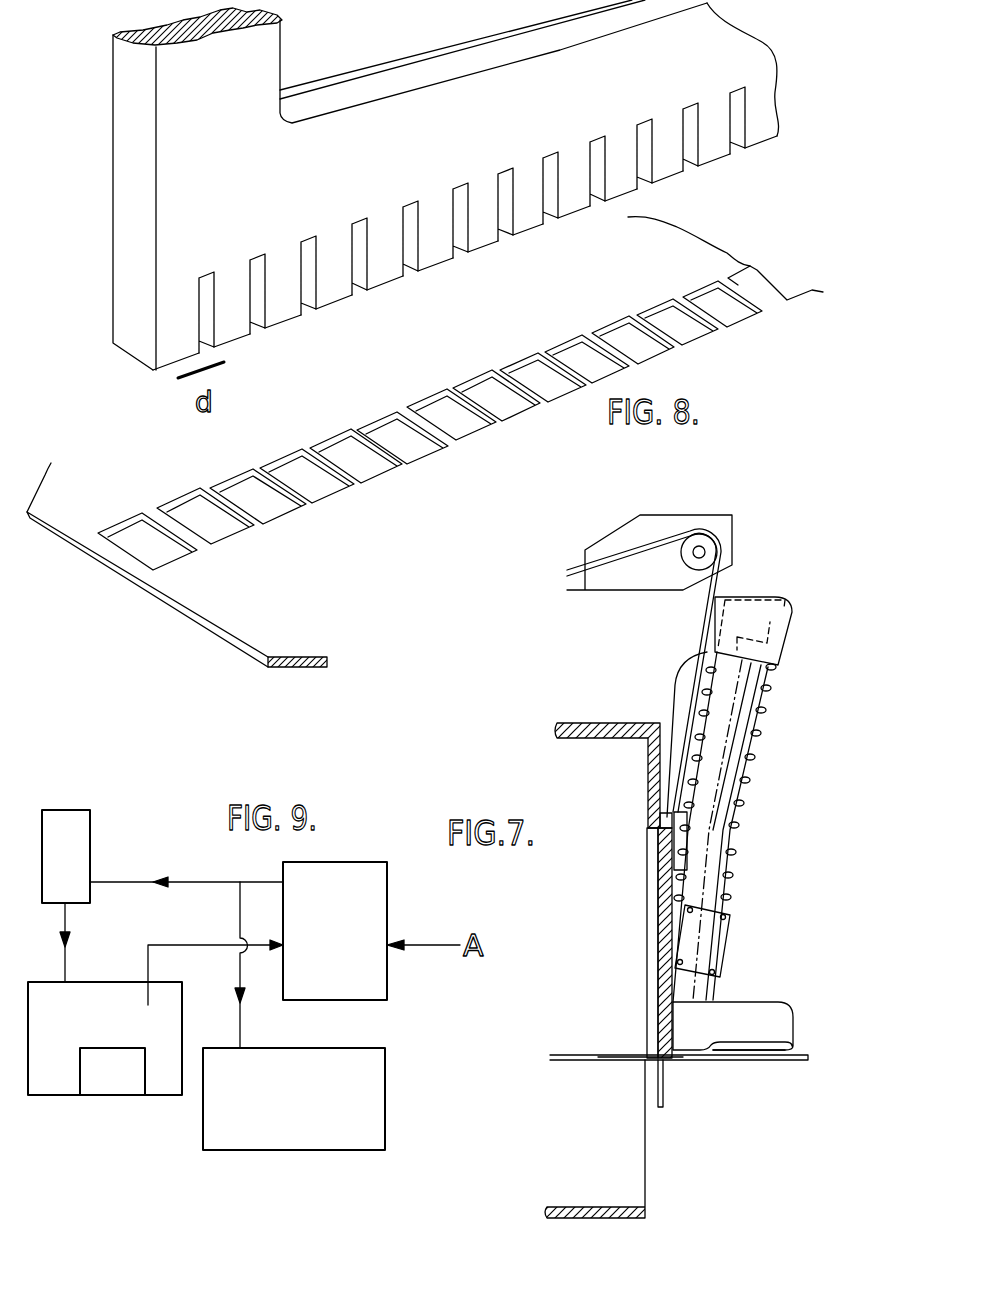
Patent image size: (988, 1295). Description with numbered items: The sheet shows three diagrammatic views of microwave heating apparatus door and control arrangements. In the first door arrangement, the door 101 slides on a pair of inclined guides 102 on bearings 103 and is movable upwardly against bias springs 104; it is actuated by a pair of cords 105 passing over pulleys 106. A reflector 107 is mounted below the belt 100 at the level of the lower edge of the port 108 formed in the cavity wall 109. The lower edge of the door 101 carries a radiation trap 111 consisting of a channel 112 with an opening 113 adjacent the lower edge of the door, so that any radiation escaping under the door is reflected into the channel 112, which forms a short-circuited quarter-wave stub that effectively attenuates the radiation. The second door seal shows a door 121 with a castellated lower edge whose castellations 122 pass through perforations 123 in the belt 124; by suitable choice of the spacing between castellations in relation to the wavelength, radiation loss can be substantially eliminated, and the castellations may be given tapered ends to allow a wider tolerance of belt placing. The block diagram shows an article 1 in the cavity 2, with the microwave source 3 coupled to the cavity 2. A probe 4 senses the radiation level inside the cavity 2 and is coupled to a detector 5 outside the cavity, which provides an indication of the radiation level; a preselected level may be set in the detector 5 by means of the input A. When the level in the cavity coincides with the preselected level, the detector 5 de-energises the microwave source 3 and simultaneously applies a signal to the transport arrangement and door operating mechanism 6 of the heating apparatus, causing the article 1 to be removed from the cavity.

In FIG. 9, the article 1 is at (117, 1078).
In FIG. 9, the cavity 2 is at (57, 1075).
In FIG. 9, the microwave source 3 is at (68, 842).
In FIG. 9, the probe 4 is at (148, 993).
In FIG. 9, the detector 5 is at (370, 892).
In FIG. 9, the transport arrangement and door operating mechanism 6 is at (370, 1122).
In FIG. 7, the belt 100 is at (797, 1060).
In FIG. 7, the door 101 is at (668, 957).
In FIG. 7, the inclined guides 102 is at (723, 772).
In FIG. 7, the bearings 103 is at (720, 932).
In FIG. 7, the bias springs 104 is at (760, 713).
In FIG. 7, the cords 105 is at (710, 618).
In FIG. 7, the pulleys 106 is at (708, 553).
In FIG. 7, the reflector 107 is at (683, 1063).
In FIG. 7, the port 108 is at (657, 867).
In FIG. 7, the cavity wall 109 is at (652, 800).
In FIG. 7, the radiation trap 111 is at (755, 1002).
In FIG. 7, the channel 112 is at (745, 1053).
In FIG. 7, the opening 113 is at (683, 1053).
In FIG. 8, the door 121 is at (731, 83).
In FIG. 8, the castellations 122 is at (437, 247).
In FIG. 8, the perforations 123 is at (525, 373).
In FIG. 8, the belt 124 is at (138, 568).